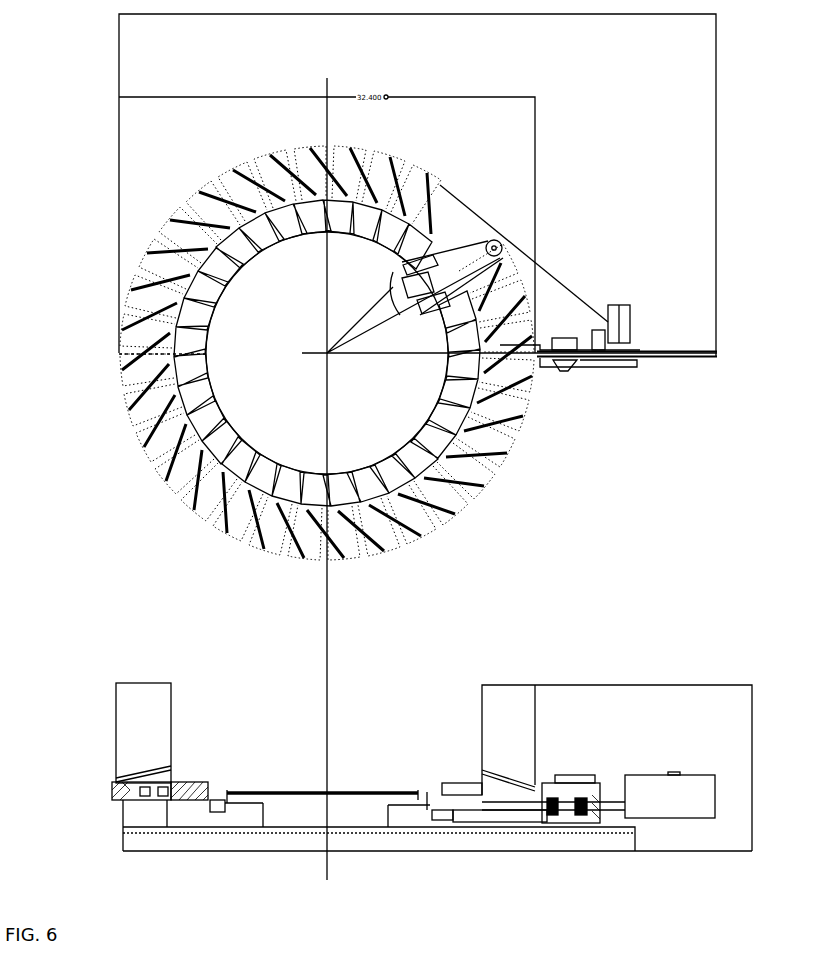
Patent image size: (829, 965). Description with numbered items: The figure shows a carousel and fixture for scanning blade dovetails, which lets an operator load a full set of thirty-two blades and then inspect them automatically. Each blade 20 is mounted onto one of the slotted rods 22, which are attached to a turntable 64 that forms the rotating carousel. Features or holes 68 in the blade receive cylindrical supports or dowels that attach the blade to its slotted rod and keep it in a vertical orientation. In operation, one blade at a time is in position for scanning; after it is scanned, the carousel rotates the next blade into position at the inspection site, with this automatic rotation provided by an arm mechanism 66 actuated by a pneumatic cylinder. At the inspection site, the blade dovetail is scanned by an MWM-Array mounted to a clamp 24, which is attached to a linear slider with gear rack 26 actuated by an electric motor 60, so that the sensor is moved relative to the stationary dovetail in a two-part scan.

The blade 20 is at (508, 430).
The slotted rod 22 is at (505, 453).
The clamp 24 is at (565, 368).
The linear slider with gear rack 26 is at (602, 817).
The electric motor 60 is at (624, 308).
The turntable 64 is at (407, 787).
The arm mechanism 66 is at (458, 262).
The holes 68 is at (138, 785).